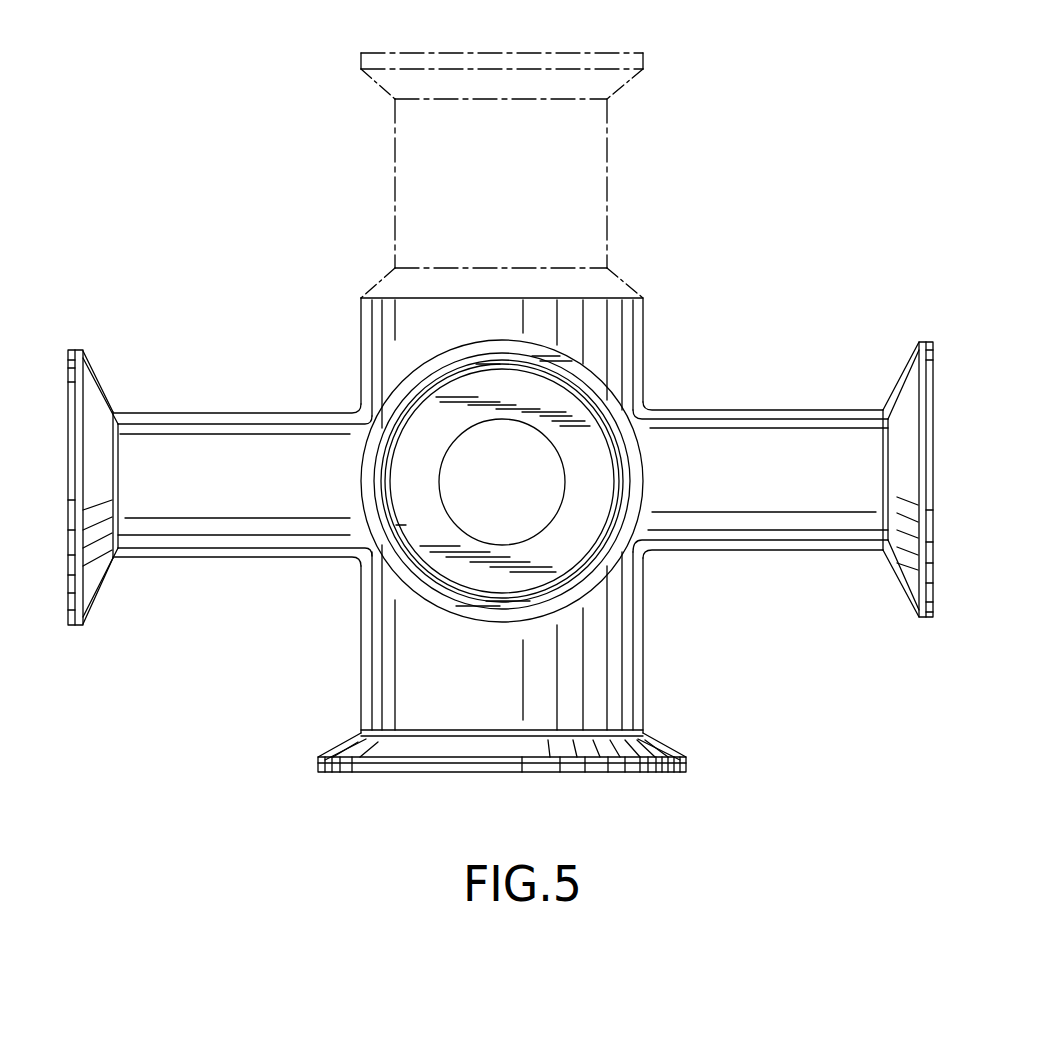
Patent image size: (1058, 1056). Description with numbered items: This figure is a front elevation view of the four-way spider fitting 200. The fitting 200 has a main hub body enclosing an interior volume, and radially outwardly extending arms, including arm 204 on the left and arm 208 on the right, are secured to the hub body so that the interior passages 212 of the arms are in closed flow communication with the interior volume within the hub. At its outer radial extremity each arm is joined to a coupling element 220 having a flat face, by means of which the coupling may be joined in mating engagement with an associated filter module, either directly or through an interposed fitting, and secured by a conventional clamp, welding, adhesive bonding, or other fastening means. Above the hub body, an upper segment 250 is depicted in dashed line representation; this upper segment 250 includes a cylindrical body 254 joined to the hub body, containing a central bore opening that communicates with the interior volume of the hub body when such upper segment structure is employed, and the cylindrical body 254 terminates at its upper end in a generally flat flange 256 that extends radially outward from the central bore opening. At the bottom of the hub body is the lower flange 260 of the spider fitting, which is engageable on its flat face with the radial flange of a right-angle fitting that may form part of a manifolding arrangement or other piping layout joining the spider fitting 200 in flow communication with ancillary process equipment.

The spider fitting 200 is at (495, 533).
The arm 204 is at (214, 463).
The arm 208 is at (793, 427).
The interior passage 212 is at (528, 523).
The coupling element 220 is at (70, 370).
The upper segment 250 is at (551, 149).
The cylindrical body 254 is at (393, 177).
The upper flange (phantom) 256 is at (578, 57).
The lower flange 260 is at (660, 742).